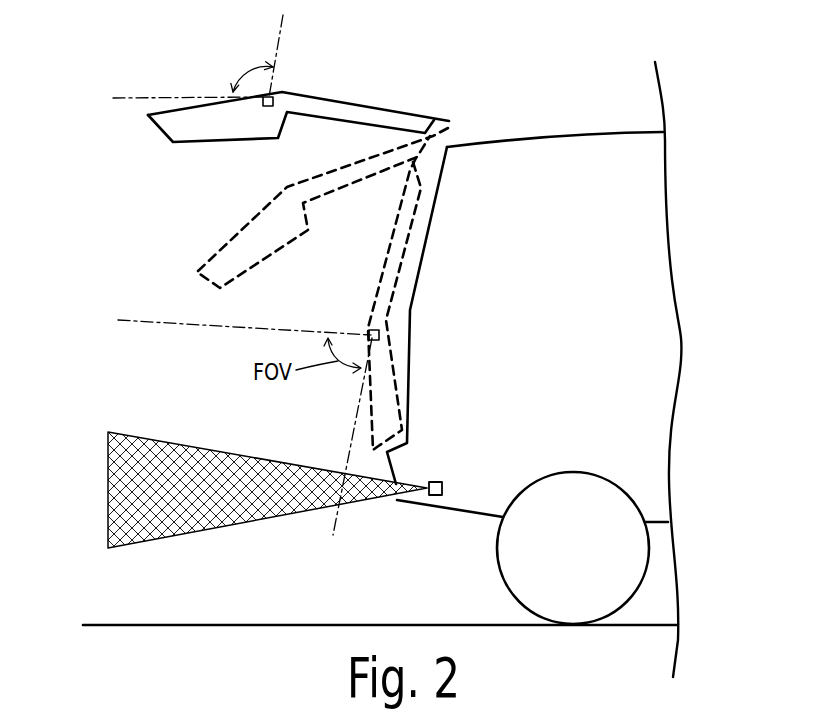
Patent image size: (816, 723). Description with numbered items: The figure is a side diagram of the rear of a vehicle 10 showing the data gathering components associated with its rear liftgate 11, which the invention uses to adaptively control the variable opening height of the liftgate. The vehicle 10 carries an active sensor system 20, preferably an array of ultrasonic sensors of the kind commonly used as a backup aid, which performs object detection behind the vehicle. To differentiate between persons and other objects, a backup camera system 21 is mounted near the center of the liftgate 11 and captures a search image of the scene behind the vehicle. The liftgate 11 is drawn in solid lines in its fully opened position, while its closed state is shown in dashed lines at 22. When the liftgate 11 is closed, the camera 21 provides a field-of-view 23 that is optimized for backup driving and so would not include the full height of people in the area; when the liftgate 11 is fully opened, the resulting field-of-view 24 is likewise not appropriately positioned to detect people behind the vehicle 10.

The vehicle 10 is at (605, 130).
The liftgate 11 is at (390, 107).
The sensor system 20 is at (444, 487).
The backup camera system 21 is at (268, 108).
The closed state of liftgate 22 is at (380, 281).
The field-of-view 23 is at (160, 322).
The field-of-view 24 is at (277, 47).